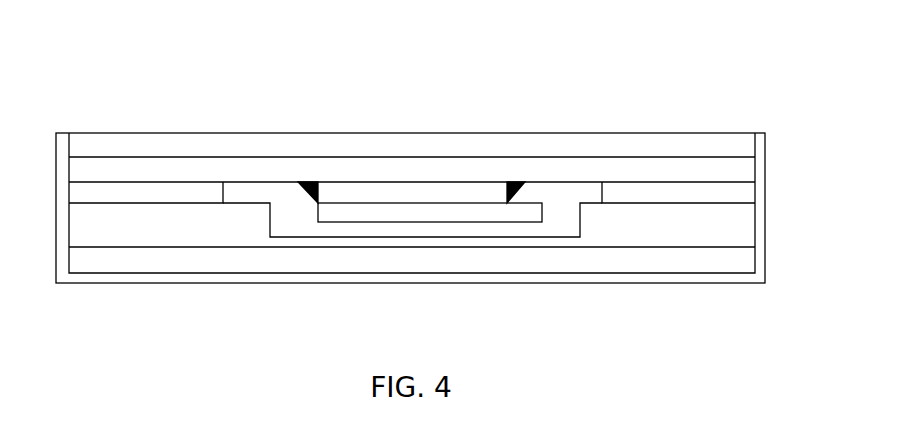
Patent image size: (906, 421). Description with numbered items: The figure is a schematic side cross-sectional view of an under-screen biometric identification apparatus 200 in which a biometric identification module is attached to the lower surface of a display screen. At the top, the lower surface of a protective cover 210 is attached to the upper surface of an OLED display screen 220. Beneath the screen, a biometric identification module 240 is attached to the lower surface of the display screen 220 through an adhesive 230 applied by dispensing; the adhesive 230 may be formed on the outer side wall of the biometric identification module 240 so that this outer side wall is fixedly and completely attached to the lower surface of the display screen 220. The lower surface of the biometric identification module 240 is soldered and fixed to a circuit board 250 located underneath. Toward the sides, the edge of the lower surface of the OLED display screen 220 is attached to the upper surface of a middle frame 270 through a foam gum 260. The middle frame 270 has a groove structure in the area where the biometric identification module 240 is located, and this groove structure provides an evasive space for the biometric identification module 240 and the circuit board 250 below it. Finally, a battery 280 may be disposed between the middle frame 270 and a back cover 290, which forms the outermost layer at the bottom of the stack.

The display device 200 is at (410, 178).
The protective cover 210 is at (212, 137).
The OLED display screen 220 is at (214, 165).
The adhesive 230 is at (522, 185).
The biometric identification module 240 is at (493, 188).
The circuit board 250 is at (413, 215).
The foam gum 260 is at (121, 190).
The middle frame 270 is at (623, 223).
The battery 280 is at (418, 258).
The back cover 290 is at (237, 283).